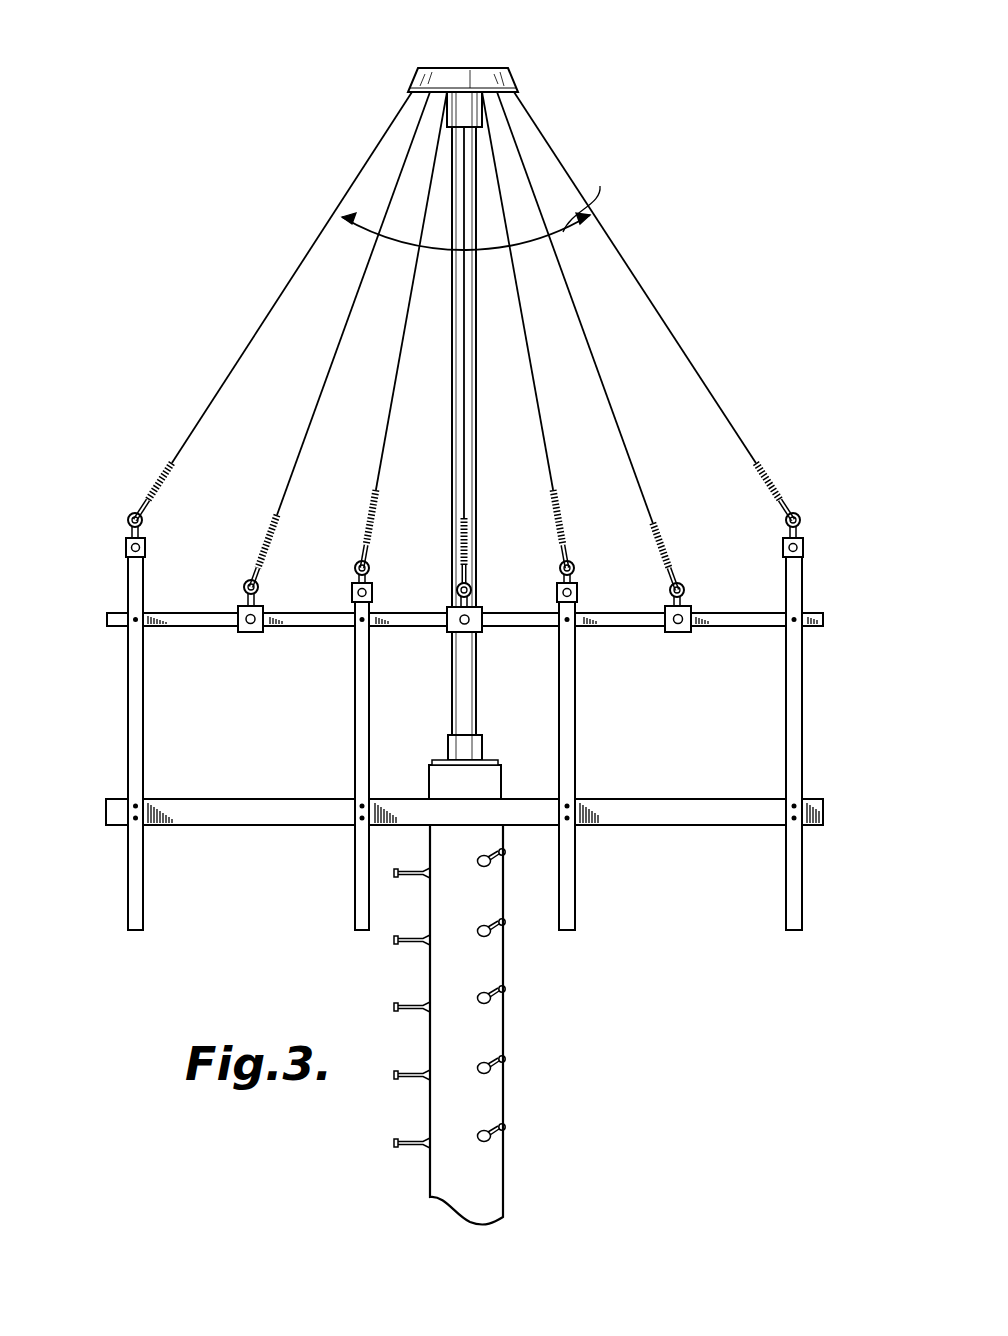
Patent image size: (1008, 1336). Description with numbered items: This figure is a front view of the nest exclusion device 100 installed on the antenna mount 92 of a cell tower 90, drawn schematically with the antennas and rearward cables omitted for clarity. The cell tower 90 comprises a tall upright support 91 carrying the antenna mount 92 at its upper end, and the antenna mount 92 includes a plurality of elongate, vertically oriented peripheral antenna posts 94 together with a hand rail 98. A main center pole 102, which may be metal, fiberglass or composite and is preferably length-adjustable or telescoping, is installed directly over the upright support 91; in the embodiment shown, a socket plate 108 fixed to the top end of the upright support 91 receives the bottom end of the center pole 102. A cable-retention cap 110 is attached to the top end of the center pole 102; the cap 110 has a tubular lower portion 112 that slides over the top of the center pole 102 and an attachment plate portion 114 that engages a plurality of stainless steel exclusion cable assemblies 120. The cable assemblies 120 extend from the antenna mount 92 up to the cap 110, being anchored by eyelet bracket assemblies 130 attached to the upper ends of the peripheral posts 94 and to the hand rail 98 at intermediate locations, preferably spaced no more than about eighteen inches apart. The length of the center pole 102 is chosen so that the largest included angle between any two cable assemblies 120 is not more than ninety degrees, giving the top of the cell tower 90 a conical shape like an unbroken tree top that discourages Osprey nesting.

The cell tower 90 is at (676, 1046).
The upright support 91 is at (503, 1085).
The antenna mount 92 is at (697, 829).
The antenna posts 94 is at (128, 895).
The hand rail 98 is at (818, 611).
The nest exclusion device 100 is at (640, 252).
The center pole 102 is at (476, 512).
The socket plate 108 is at (450, 747).
The cable-retention cap 110 is at (511, 68).
The tubular lower portion 112 is at (483, 108).
The attachment plate portion 114 is at (410, 90).
The cable assemblies 120 is at (265, 325).
The eyelet bracket assembly 130 is at (130, 540).